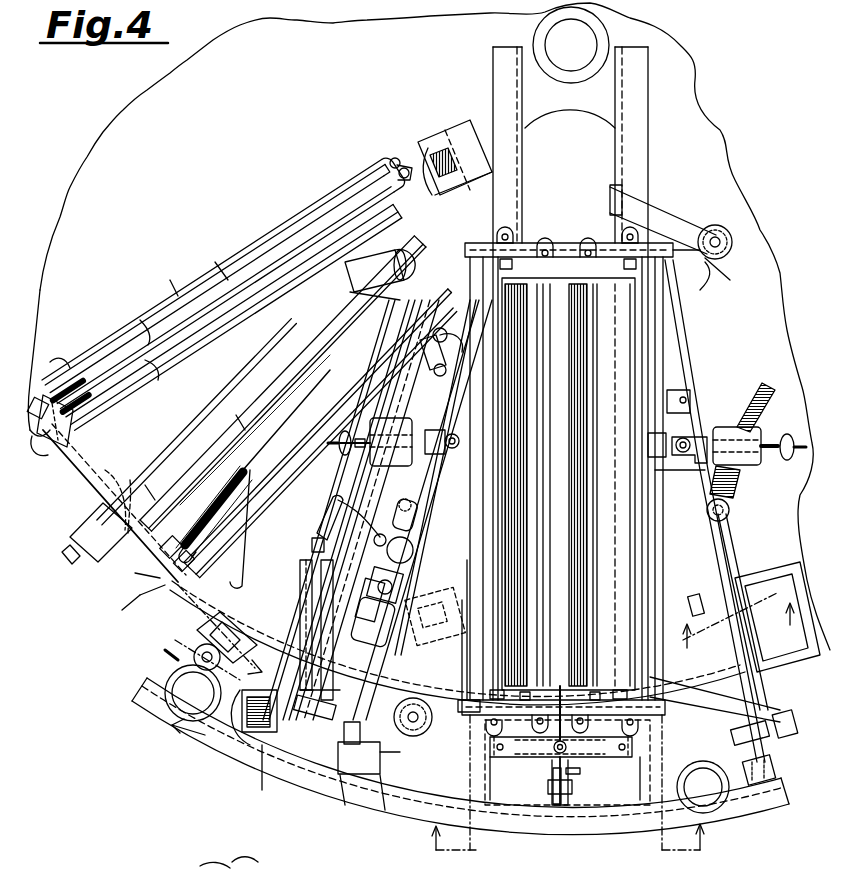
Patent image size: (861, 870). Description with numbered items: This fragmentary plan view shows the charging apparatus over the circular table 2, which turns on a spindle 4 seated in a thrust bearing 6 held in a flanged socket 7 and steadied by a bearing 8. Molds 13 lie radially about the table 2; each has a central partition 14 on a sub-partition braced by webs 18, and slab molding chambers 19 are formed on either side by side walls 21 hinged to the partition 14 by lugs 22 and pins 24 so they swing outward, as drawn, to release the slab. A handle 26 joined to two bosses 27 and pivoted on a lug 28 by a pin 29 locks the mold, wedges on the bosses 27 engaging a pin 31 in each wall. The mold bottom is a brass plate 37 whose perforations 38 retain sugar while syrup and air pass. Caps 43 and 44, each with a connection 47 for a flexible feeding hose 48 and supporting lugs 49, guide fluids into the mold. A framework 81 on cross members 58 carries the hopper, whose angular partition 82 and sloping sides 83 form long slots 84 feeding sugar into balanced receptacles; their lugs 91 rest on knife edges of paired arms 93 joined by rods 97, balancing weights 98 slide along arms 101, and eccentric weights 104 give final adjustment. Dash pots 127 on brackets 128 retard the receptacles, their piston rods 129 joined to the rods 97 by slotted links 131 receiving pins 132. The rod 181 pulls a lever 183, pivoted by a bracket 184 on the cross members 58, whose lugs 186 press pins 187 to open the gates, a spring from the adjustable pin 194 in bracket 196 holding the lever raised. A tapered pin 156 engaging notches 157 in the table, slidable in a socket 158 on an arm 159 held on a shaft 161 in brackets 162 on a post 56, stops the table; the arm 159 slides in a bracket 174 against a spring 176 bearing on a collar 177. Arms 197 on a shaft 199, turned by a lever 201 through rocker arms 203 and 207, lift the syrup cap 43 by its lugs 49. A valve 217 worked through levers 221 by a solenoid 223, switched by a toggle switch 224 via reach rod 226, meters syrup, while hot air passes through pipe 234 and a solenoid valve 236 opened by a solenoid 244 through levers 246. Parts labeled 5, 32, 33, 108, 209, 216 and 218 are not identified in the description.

The circular table 2 is at (249, 133).
The spindle 4 is at (562, 31).
The end block 5 is at (60, 380).
The thrust bearing 6 is at (322, 526).
The flanged socket 7 is at (566, 789).
The bearing 8 is at (735, 624).
The molds 13 is at (345, 340).
The central partition 14 is at (258, 462).
The webs 18 is at (285, 410).
The slab molding chambers 19 is at (147, 344).
The side walls 21 is at (252, 262).
The lugs 22 is at (405, 167).
The pins 24 is at (393, 158).
The handle 26 is at (84, 530).
The bosses 27 is at (191, 546).
The lug 28 is at (134, 573).
The pin 29 is at (204, 864).
The pin 31 is at (256, 596).
The link 32 is at (154, 605).
The link 33 is at (263, 864).
The brass plate 37 is at (215, 535).
The perforations 38 is at (233, 512).
The cap 43 is at (425, 495).
The cap 44 is at (735, 523).
The connection 47 is at (730, 508).
The flexible feeding hose 48 is at (758, 388).
The supporting lugs 49 is at (745, 575).
The post 56 is at (178, 678).
The cross members 58 is at (600, 830).
The framework 81 is at (493, 800).
The angular partition 82 is at (565, 400).
The inwardly sloping sides 83 is at (620, 612).
The long slots 84 is at (560, 290).
The lugs 91 is at (585, 246).
The arms 93 is at (522, 246).
The rods 97 is at (470, 660).
The balancing weights 98 is at (728, 428).
The arms 101 is at (772, 436).
The eccentrically mounted weights 104 is at (790, 460).
The threaded rod 108 is at (738, 485).
The dash pots 127 is at (733, 247).
The brackets 128 is at (668, 210).
The piston rods 129 is at (432, 720).
The links 131 is at (690, 258).
The pins 132 is at (422, 736).
The spring pressed tapered pin 156 is at (127, 500).
The notches 157 is at (109, 489).
The socket 158 is at (85, 525).
The arm 159 is at (135, 595).
The shaft 161 is at (197, 650).
The brackets 162 is at (156, 649).
The bracket 174 is at (200, 625).
The spring 176 is at (242, 720).
The collar 177 is at (240, 723).
The rod 181 is at (640, 745).
The lever 183 is at (572, 775).
The bracket 184 is at (560, 808).
The projecting lugs 186 is at (563, 713).
The pins 187 is at (560, 690).
The adjustable pin 194 is at (553, 752).
The bracket 196 is at (510, 752).
The arms 197 is at (436, 330).
The shaft 199 is at (735, 718).
The lever 201 is at (340, 690).
The rocker arm 203 is at (435, 616).
The rocker arm 207 is at (750, 708).
The bracket 209 is at (787, 732).
The block 216 is at (370, 660).
The valve 217 is at (413, 548).
The valve 218 is at (405, 582).
The levers 221 is at (335, 497).
The solenoid 223 is at (267, 774).
The toggle switch 224 is at (330, 799).
The reach rod 226 is at (384, 805).
The pipe 234 is at (355, 258).
The solenoid valve 236 is at (425, 360).
The solenoid 244 is at (442, 135).
The levers 246 is at (395, 298).